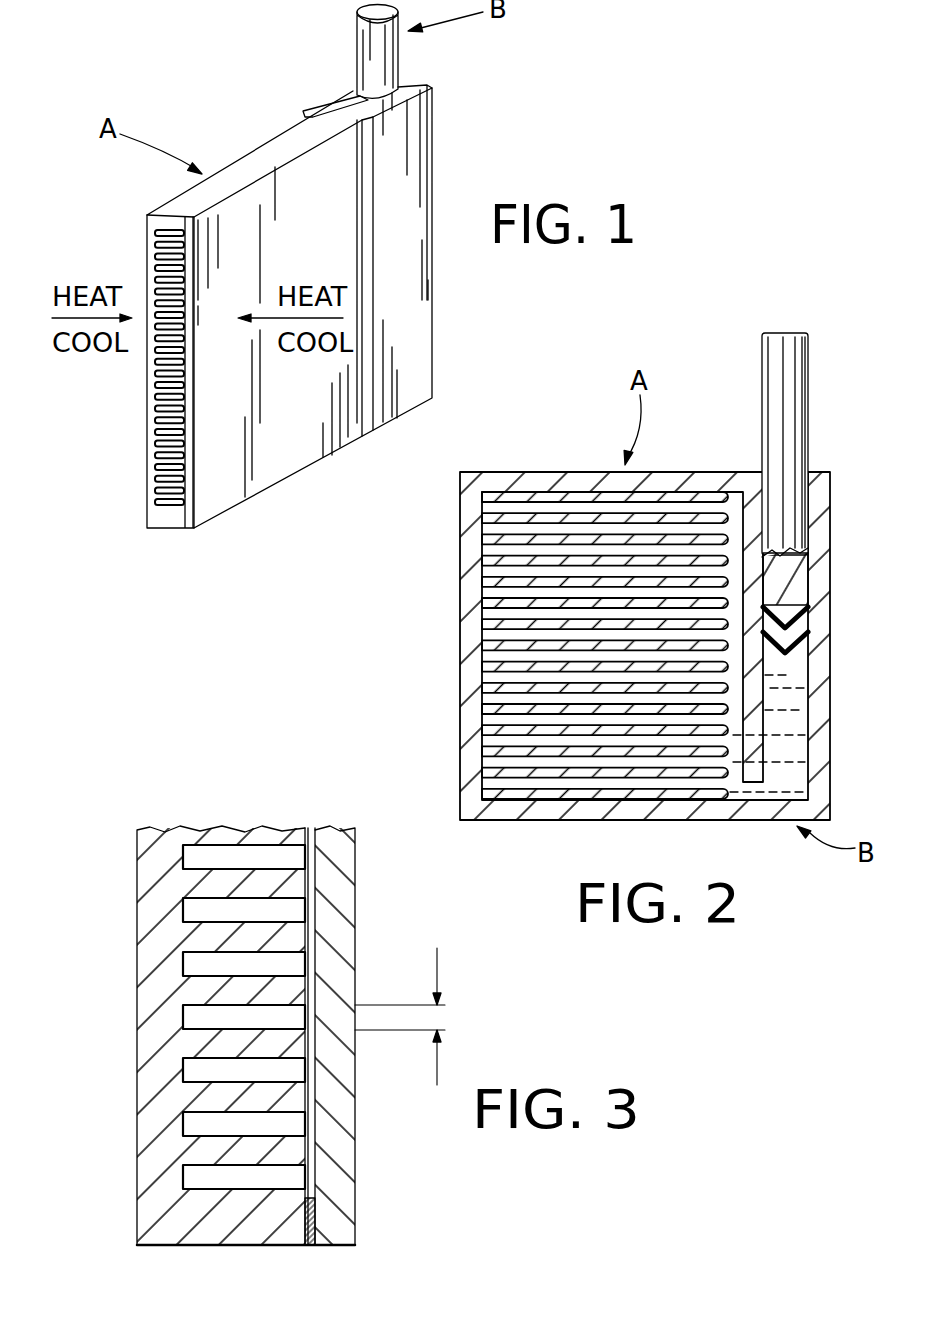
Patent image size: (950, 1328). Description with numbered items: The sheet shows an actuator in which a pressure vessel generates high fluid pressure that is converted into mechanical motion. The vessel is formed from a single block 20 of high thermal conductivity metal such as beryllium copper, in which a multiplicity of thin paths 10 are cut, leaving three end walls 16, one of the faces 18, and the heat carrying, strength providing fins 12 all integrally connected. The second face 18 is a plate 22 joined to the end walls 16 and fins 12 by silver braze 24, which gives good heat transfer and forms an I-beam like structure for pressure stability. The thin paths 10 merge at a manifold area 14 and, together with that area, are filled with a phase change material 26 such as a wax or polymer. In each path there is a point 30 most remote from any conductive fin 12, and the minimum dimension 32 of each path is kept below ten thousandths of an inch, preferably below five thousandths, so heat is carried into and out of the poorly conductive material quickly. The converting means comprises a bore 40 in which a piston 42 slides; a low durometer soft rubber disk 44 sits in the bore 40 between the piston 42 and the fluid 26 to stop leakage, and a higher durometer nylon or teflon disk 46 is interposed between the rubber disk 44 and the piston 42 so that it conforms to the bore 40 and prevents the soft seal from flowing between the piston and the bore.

In FIG. 2, the thin paths 10 is at (564, 615).
In FIG. 3, the thin paths 10 is at (247, 974).
In FIG. 2, the fins 12 is at (500, 548).
In FIG. 3, the fins 12 is at (213, 942).
In FIG. 2, the manifold area 14 is at (737, 788).
In FIG. 2, the end walls 16 is at (707, 485).
In FIG. 3, the faces 18 is at (158, 850).
In FIG. 1, the block 20 is at (155, 522).
In FIG. 3, the block 20 is at (218, 1002).
In FIG. 1, the plate 22 is at (277, 457).
In FIG. 3, the plate 22 is at (340, 1193).
In FIG. 3, the silver braze 24 is at (313, 1247).
In FIG. 2, the phase change material 26 is at (793, 773).
In FIG. 3, the point 30 is at (248, 966).
In FIG. 3, the minimum dimension 32 is at (437, 950).
In FIG. 2, the bore 40 is at (797, 705).
In FIG. 1, the piston 42 is at (383, 62).
In FIG. 2, the piston 42 is at (785, 427).
In FIG. 2, the soft rubber disk 44 is at (806, 651).
In FIG. 2, the nylon or teflon disk 46 is at (806, 600).